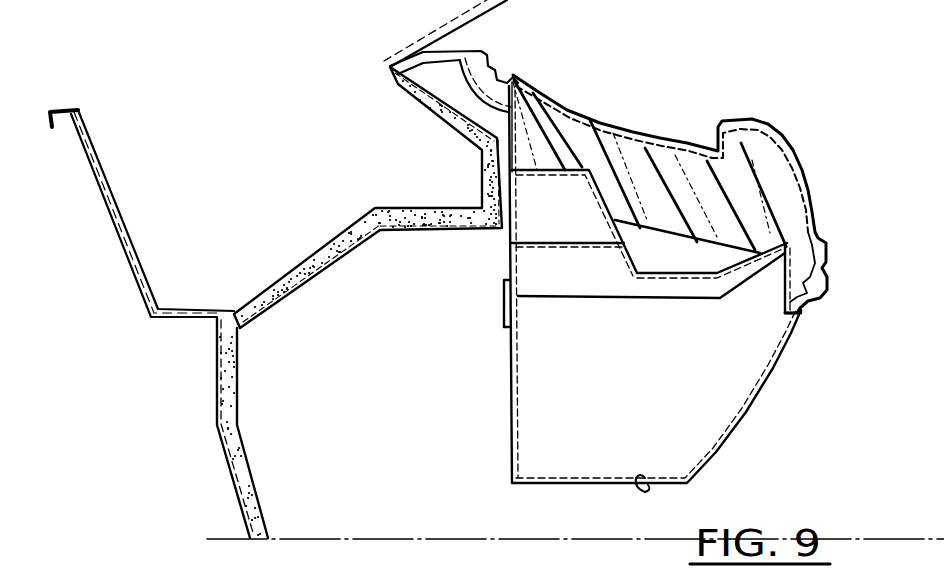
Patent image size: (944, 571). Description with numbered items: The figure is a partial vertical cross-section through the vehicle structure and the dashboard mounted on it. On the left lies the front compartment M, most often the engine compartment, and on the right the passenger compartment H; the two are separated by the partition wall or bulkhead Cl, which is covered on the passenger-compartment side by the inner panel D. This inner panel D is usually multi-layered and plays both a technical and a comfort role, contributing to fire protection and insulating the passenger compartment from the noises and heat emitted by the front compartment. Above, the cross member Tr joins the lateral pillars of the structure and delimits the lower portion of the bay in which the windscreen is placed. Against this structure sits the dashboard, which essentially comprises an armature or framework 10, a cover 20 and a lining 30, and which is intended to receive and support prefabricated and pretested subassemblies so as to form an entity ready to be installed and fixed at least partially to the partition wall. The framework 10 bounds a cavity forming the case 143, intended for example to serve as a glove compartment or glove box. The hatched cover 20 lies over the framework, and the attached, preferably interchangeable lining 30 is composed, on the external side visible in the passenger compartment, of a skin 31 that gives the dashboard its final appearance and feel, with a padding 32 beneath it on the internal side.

The armature or framework 10 is at (510, 266).
The cover 20 is at (780, 208).
The lining 30 is at (838, 83).
The skin 31 is at (768, 128).
The padding 32 is at (783, 140).
The case 143 is at (640, 397).
The front compartment M is at (199, 47).
The passenger compartment H is at (696, 28).
The cross member Tr is at (433, 103).
The partition wall Cl is at (218, 370).
The inner panel D is at (240, 406).